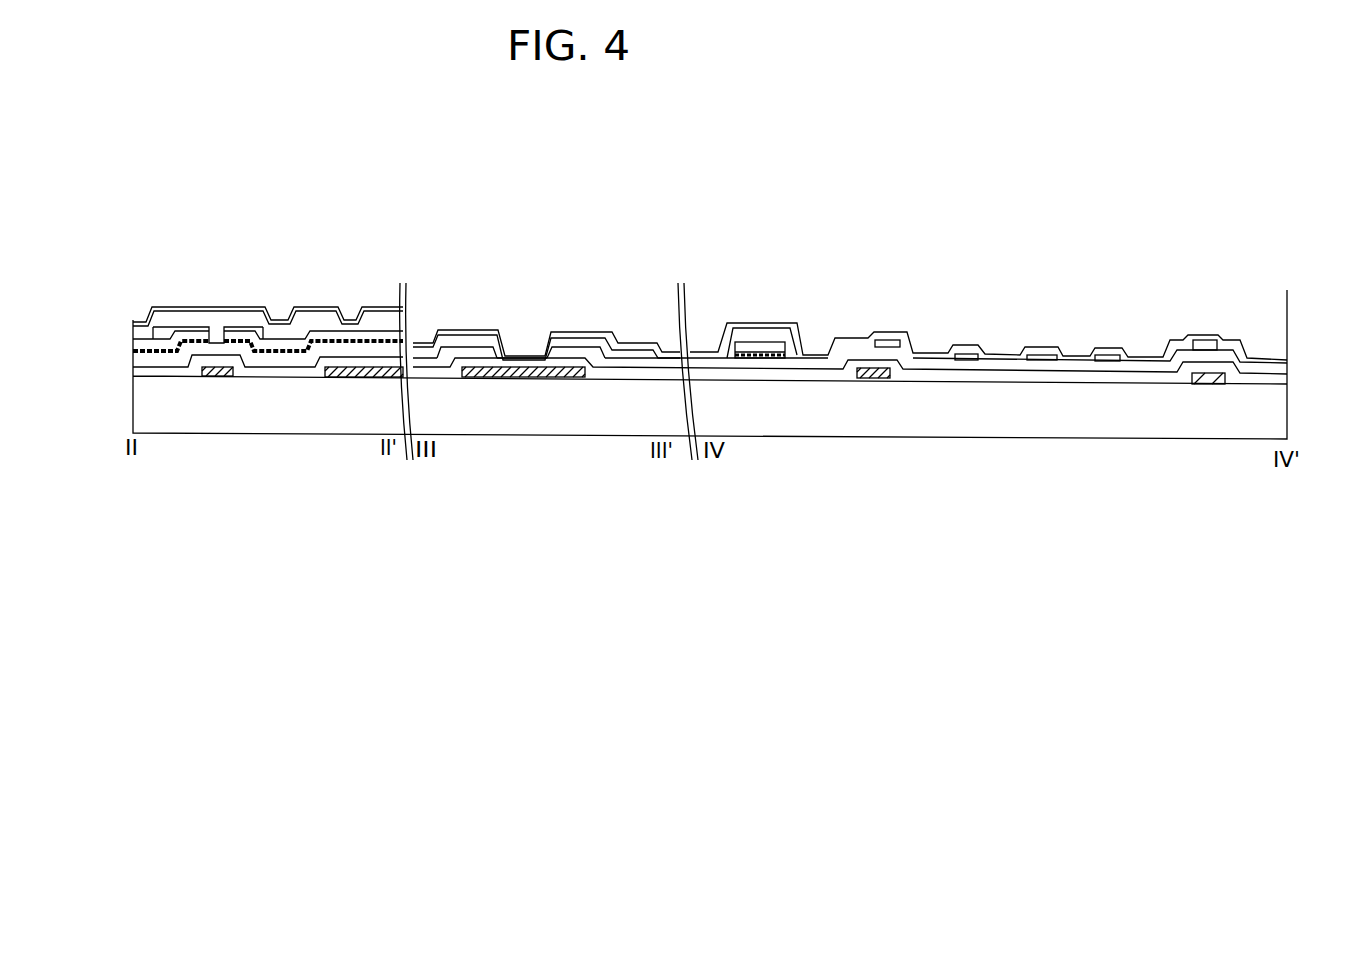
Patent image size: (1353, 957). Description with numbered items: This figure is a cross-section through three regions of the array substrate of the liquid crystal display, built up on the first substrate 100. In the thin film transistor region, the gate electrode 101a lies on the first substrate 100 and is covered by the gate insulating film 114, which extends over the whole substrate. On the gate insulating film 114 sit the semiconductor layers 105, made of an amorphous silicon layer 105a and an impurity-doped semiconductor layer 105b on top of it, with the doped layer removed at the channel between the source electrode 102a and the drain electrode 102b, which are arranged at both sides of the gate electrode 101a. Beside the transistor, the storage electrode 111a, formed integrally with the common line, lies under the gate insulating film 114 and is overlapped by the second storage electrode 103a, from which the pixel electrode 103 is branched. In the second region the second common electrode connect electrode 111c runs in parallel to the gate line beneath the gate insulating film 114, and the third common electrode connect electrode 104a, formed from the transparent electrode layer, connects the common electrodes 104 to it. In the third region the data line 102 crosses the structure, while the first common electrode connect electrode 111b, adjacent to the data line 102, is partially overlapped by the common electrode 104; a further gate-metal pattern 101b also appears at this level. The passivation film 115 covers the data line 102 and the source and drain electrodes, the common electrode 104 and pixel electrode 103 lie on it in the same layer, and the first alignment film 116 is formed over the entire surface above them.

The first substrate 100 is at (133, 413).
The gate electrode 101a is at (218, 377).
The gate pad 101b is at (878, 379).
The data line 102 is at (745, 345).
The source electrode 102a is at (157, 343).
The drain electrode 102b is at (248, 332).
The pixel electrode 103 is at (965, 357).
The second storage electrode 103a is at (372, 308).
The common electrode 104 is at (887, 342).
The third common electrode connect electrode 104a is at (580, 332).
The semiconductor layers 105 is at (653, 423).
The amorphous silicon layer 105a is at (133, 360).
The impurity-doped semiconductor layer 105b is at (133, 351).
The storage electrode 111a is at (350, 378).
The first common electrode connect electrode 111b is at (1205, 385).
The second common electrode connect electrode 111c is at (545, 378).
The gate insulating film 114 is at (133, 375).
The passivation film 115 is at (200, 322).
The first alignment film 116 is at (310, 308).